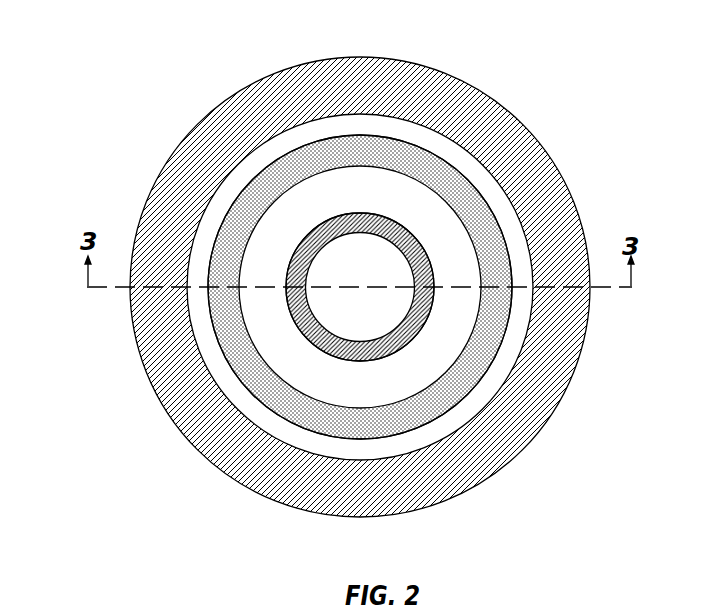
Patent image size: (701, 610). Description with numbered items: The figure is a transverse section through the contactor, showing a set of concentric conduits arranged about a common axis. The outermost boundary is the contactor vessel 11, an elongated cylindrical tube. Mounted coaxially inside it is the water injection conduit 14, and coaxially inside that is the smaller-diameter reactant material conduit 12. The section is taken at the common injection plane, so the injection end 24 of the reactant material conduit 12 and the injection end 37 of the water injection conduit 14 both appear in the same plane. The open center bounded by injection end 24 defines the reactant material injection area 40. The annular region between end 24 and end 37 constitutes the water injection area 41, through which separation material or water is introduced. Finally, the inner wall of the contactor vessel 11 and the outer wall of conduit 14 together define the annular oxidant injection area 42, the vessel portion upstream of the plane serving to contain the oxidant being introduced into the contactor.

The contactor vessel 11 is at (532, 128).
The annular oxidant injection area 42 is at (398, 128).
The water injection area 41 is at (238, 395).
The injection end of water injection conduit 37 is at (267, 165).
The water injection conduit 14 is at (453, 213).
The reactant material conduit 12 is at (370, 213).
The injection end of reactant material conduit 24 is at (361, 343).
The reactant material injection area 40 is at (375, 320).